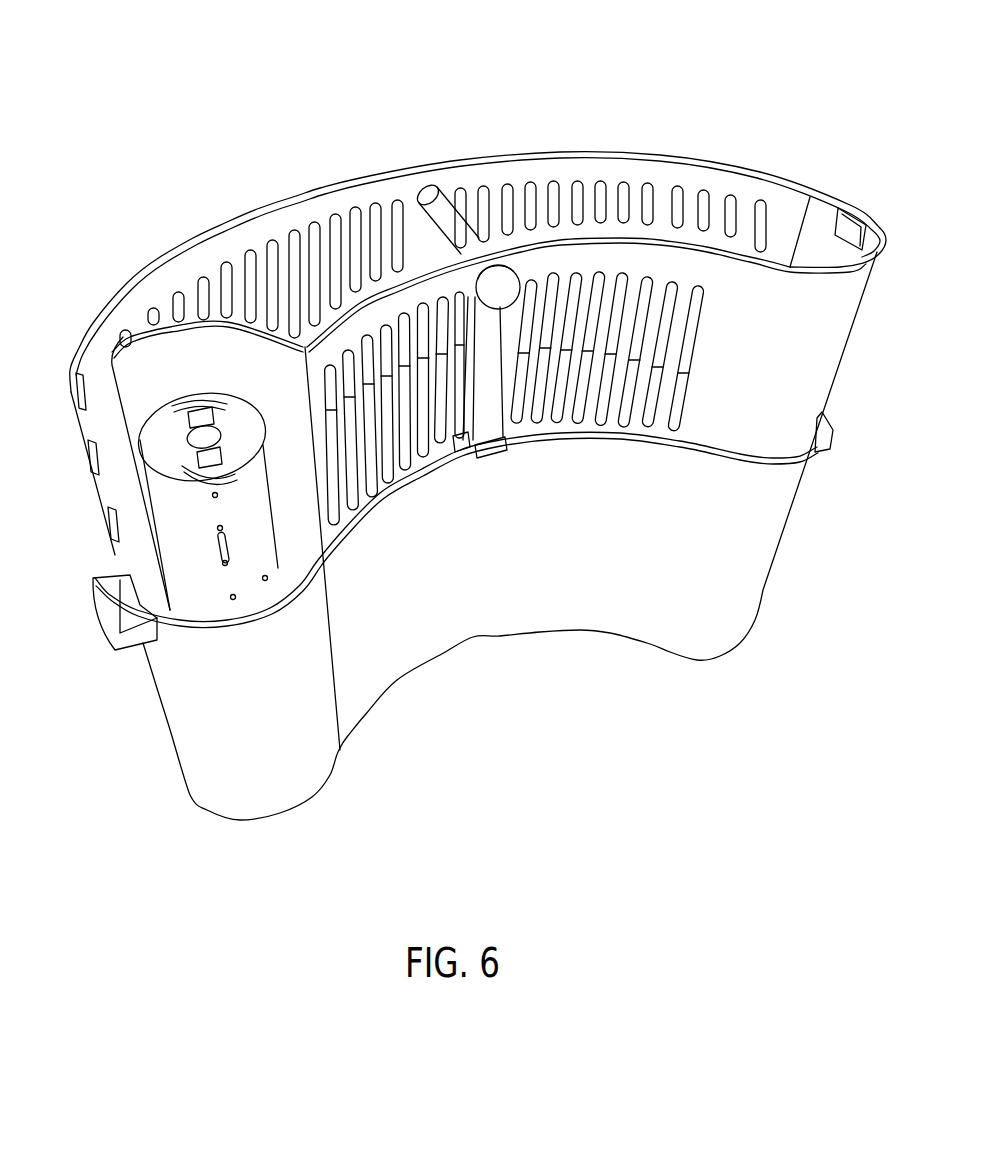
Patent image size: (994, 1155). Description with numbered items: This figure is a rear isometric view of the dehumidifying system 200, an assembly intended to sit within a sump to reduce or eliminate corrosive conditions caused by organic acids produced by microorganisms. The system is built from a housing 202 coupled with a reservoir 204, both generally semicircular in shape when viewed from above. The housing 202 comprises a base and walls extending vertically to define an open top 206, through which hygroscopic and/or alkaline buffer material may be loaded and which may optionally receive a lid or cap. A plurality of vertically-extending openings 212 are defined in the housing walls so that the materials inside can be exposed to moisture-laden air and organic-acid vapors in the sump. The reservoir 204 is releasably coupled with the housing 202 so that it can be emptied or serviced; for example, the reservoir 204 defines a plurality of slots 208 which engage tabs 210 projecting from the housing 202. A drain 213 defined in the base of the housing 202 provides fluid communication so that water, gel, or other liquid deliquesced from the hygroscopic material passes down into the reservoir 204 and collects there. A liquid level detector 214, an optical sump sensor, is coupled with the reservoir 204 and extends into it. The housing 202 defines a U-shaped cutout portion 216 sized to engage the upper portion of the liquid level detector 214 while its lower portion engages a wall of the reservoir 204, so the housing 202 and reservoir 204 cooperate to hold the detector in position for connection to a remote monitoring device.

The dehumidifying system 200 is at (486, 75).
The housing 202 is at (827, 328).
The reservoir 204 is at (827, 424).
The open top 206 is at (638, 183).
The slots 208 is at (493, 457).
The tabs 210 is at (500, 450).
The vertically-extending openings 212 is at (731, 205).
The drain 213 is at (458, 447).
The liquid level detector 214 is at (176, 397).
The U-shaped cutout portion 216 is at (207, 285).